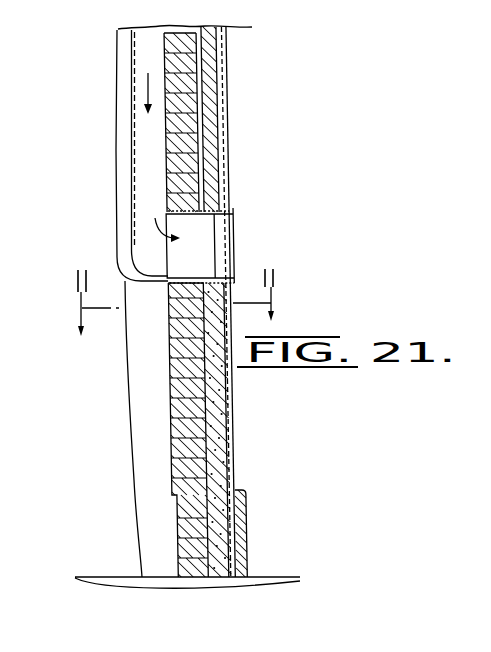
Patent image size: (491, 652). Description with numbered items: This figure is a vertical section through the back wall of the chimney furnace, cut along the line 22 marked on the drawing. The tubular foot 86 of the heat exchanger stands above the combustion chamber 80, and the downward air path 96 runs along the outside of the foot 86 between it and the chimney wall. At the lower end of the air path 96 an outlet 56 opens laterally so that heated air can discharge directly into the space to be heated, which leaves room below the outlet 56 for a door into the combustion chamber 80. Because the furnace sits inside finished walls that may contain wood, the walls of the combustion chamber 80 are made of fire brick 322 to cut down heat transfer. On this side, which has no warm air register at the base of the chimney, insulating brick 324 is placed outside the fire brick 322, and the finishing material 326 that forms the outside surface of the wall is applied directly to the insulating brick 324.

The section line 22 is at (175, 305).
The outlet 56 is at (205, 230).
The combustion chamber 80 is at (145, 455).
The tubular foot 86 is at (128, 139).
The air path 96 is at (160, 158).
The fire brick 322 is at (192, 408).
The insulating brick 324 is at (215, 442).
The finishing material 326 is at (233, 472).